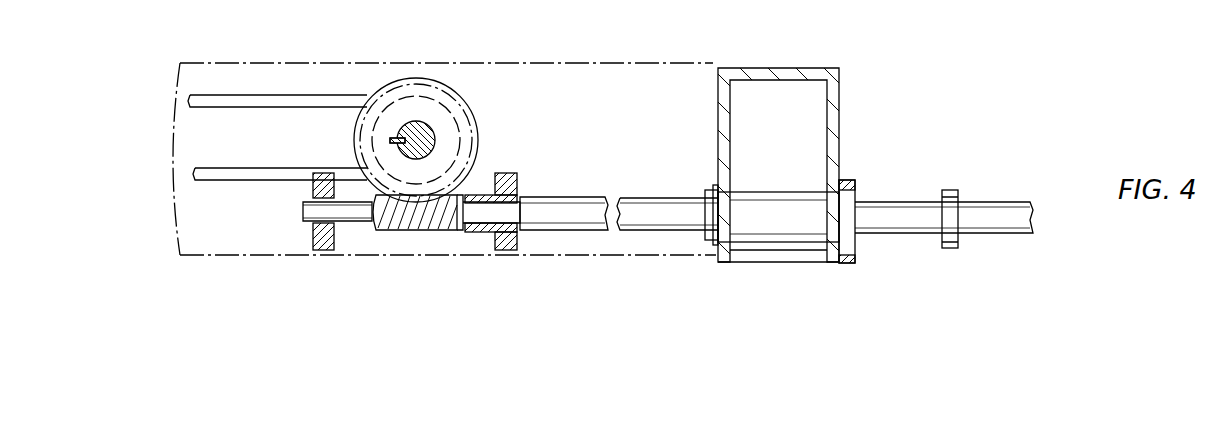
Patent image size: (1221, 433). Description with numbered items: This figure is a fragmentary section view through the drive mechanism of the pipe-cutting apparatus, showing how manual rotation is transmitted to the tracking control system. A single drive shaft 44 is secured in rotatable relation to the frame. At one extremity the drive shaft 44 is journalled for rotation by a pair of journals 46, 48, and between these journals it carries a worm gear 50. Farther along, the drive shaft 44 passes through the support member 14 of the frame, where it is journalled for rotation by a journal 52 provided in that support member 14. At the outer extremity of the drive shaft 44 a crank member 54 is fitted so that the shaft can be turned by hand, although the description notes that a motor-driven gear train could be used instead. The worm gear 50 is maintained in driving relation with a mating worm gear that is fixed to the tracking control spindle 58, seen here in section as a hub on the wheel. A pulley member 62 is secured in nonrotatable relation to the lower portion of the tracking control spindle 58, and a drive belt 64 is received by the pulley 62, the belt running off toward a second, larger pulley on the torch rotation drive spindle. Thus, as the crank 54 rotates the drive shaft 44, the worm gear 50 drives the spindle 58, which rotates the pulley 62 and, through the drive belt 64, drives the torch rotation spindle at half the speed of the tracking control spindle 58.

The support member 14 is at (835, 103).
The drive shaft 44 is at (654, 229).
The journal 46 is at (510, 251).
The journal 48 is at (323, 251).
The worm gear 50 is at (415, 218).
The journal 52 is at (847, 188).
The crank member 54 is at (950, 249).
The tracking control spindle 58 is at (412, 126).
The pulley member 62 is at (443, 118).
The drive belt 64 is at (251, 100).